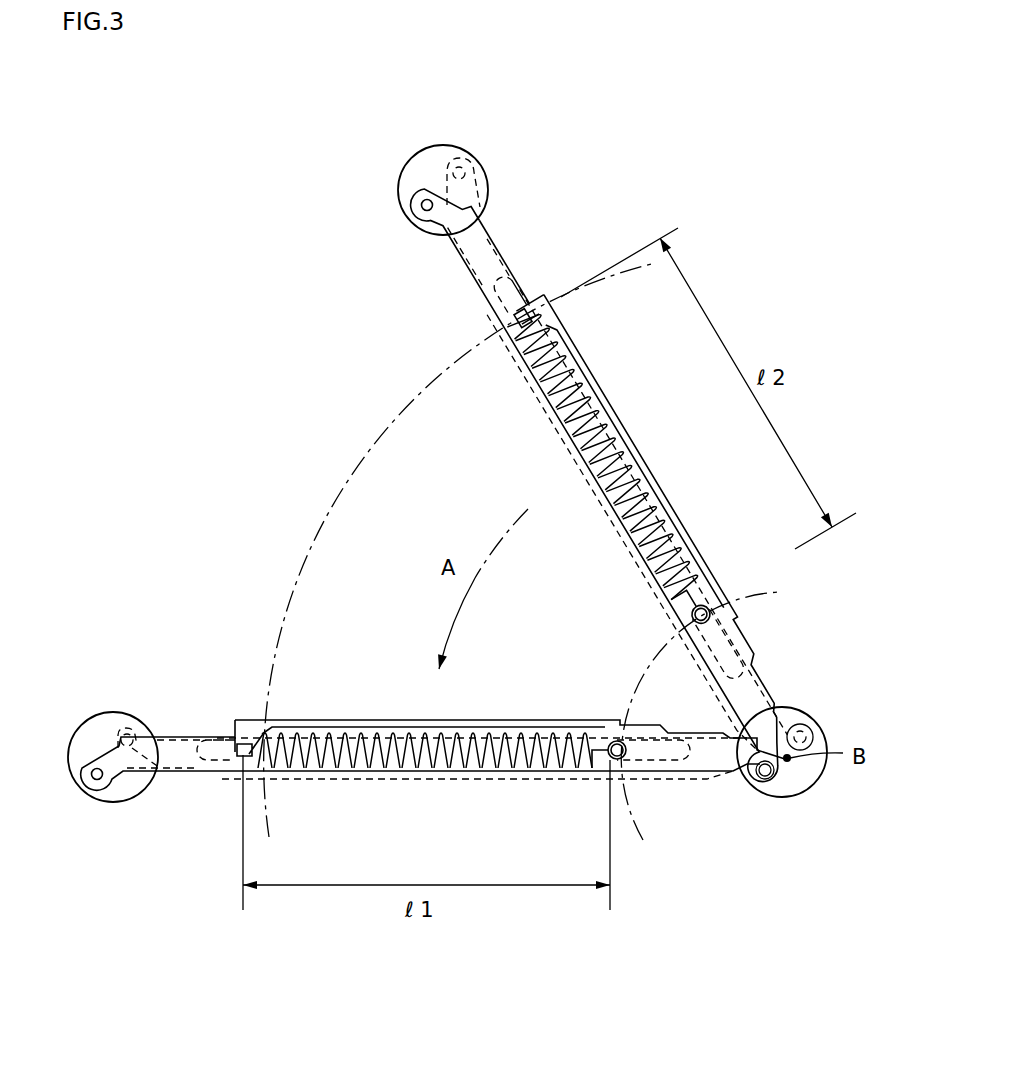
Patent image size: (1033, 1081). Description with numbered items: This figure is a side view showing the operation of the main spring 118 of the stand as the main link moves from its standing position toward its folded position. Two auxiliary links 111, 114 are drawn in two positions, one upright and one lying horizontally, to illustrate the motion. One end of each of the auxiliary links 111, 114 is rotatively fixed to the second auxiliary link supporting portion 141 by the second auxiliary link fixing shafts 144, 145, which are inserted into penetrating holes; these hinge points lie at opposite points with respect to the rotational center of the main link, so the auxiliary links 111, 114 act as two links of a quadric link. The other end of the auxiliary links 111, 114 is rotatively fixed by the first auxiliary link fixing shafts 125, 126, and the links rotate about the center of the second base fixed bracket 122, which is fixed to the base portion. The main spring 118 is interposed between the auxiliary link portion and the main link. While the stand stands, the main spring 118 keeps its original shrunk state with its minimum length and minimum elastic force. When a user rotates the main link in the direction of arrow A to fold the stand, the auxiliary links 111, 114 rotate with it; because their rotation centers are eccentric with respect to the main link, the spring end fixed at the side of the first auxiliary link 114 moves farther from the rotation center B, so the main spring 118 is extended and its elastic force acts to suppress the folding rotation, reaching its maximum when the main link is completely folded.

The auxiliary link 111 is at (513, 260).
The first auxiliary link 114 is at (457, 262).
The main spring 118 is at (587, 455).
The second base fixed bracket 122 is at (810, 777).
The first auxiliary link fixing shaft 125 is at (808, 722).
The first auxiliary link fixing shaft 126 is at (762, 775).
The second auxiliary link supporting portion 141 is at (422, 170).
The second auxiliary link fixing shaft 144 is at (468, 150).
The second auxiliary link fixing shaft 145 is at (417, 217).